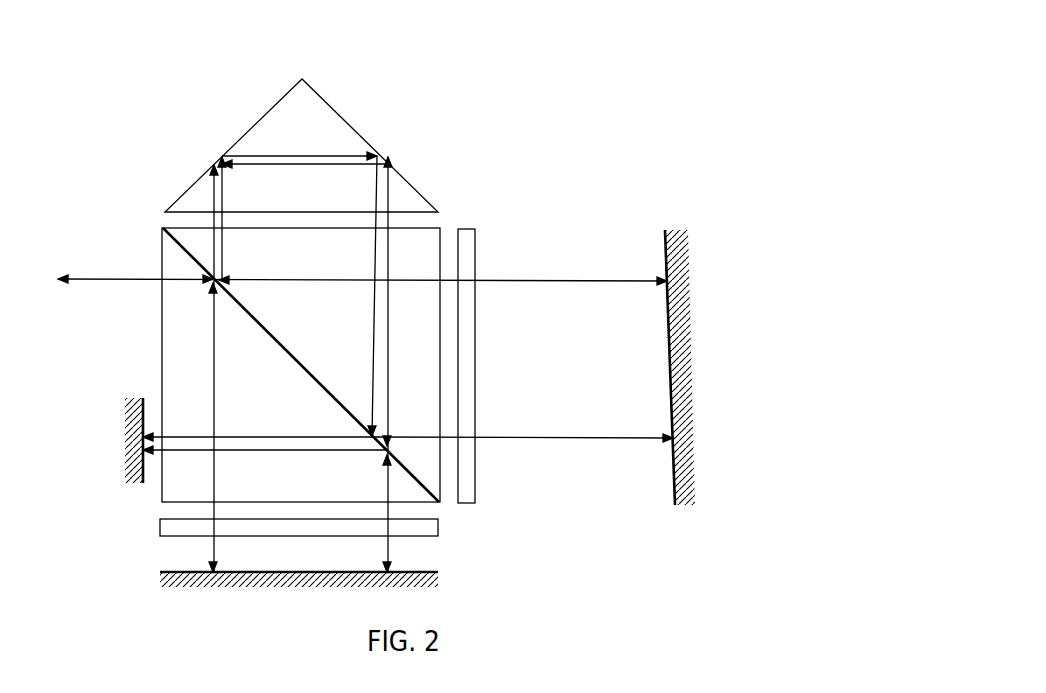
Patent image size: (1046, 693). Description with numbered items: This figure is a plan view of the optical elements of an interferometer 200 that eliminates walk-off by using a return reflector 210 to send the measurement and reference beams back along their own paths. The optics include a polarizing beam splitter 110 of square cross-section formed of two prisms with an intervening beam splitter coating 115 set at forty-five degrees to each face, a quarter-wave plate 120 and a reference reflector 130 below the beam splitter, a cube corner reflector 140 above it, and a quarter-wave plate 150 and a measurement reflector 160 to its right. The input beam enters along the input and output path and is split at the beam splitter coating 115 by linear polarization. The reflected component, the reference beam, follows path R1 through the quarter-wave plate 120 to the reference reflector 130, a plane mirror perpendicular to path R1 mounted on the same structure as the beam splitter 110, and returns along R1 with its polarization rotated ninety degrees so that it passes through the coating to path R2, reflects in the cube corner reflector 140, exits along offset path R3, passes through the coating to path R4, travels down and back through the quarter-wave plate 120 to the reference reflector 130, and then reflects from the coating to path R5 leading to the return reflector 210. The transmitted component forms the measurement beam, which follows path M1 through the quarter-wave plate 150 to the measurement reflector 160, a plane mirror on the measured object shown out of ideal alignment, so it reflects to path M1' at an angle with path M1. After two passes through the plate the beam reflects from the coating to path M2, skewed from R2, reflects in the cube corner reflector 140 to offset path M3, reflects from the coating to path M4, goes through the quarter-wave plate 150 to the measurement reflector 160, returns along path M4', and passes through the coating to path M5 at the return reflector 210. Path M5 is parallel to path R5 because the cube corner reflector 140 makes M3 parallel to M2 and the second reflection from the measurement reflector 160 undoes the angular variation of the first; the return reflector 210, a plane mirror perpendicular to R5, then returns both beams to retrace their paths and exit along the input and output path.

The interferometer 200 is at (125, 102).
The polarizing beam splitter 110 is at (160, 363).
The beam splitter coating 115 is at (308, 373).
The quarter-wave plate 120 is at (160, 528).
The reference reflector 130 is at (437, 582).
The cube corner reflector 140 is at (338, 113).
The quarter-wave plate 150 is at (467, 229).
The measurement reflector 160 is at (682, 506).
The return reflector 210 is at (122, 450).
The measurement beam path M1 is at (362, 266).
The measurement beam path M1' is at (270, 293).
The measurement beam path M2 is at (222, 199).
The measurement beam path M3 is at (375, 206).
The measurement beam path M4 is at (409, 364).
The measurement beam path M4' is at (522, 448).
The measurement beam path M5 is at (310, 434).
The reference beam path R1 is at (215, 385).
The reference beam path R2 is at (212, 198).
The reference beam path R3 is at (390, 205).
The reference beam path R4 is at (387, 510).
The reference beam path R5 is at (310, 452).